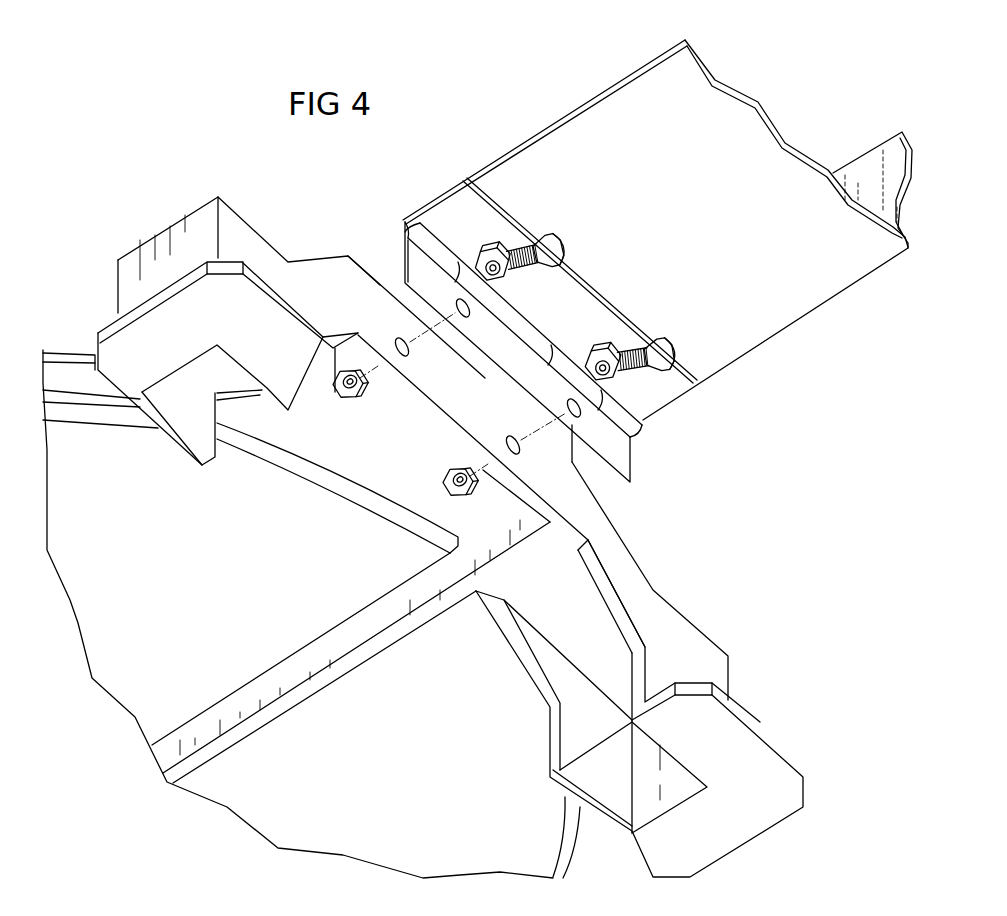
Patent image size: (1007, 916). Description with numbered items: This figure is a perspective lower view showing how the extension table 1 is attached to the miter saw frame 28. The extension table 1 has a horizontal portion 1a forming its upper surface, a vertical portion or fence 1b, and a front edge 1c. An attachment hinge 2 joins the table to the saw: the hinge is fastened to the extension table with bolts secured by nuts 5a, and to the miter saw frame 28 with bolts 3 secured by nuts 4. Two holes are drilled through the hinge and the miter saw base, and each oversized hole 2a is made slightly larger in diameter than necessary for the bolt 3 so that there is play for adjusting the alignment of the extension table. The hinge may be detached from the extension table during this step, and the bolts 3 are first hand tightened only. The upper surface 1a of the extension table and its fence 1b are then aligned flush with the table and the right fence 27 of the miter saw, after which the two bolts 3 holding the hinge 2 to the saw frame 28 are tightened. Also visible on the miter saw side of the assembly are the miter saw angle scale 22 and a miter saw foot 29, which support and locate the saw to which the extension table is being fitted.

The extension table 1 is at (657, 228).
The horizontal portion of extension table 1a is at (700, 183).
The vertical portion or fence of extension table 1b is at (863, 162).
The front edge of extension table 1c is at (567, 117).
The attachment hinge 2 is at (435, 215).
The oversized hole for bolt 2a is at (467, 320).
The bolt for attaching hinge to miter saw frame 3 is at (570, 299).
The nut 4 is at (352, 402).
The nut for attaching hinge to extension table 5a is at (480, 252).
The miter saw angle scale 22 is at (65, 355).
The miter saw right fence 27 is at (603, 480).
The miter saw frame 28 is at (443, 420).
The miter saw foot 29 is at (234, 326).